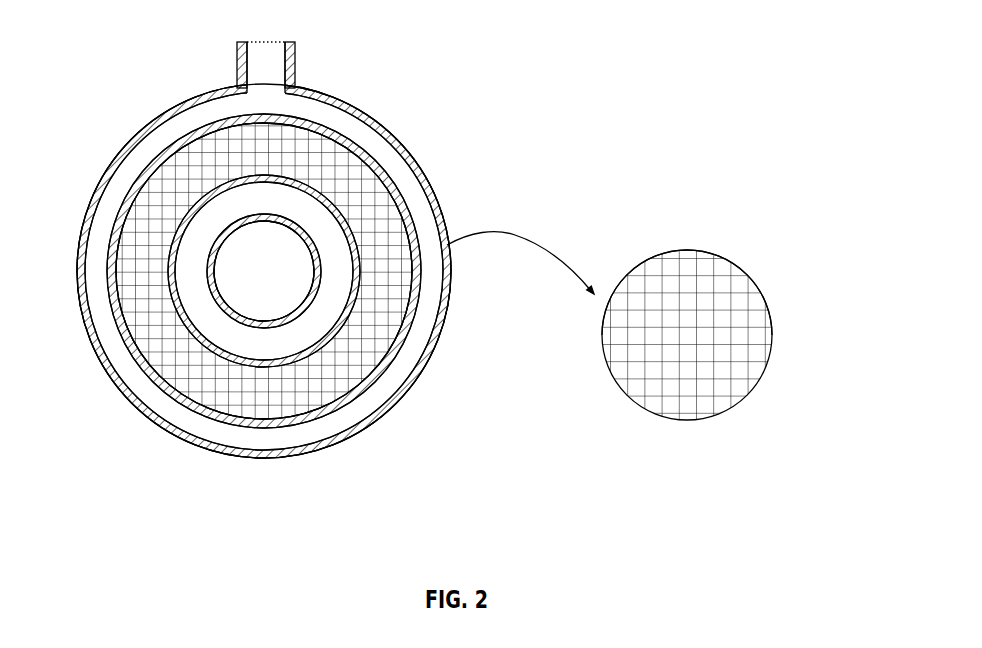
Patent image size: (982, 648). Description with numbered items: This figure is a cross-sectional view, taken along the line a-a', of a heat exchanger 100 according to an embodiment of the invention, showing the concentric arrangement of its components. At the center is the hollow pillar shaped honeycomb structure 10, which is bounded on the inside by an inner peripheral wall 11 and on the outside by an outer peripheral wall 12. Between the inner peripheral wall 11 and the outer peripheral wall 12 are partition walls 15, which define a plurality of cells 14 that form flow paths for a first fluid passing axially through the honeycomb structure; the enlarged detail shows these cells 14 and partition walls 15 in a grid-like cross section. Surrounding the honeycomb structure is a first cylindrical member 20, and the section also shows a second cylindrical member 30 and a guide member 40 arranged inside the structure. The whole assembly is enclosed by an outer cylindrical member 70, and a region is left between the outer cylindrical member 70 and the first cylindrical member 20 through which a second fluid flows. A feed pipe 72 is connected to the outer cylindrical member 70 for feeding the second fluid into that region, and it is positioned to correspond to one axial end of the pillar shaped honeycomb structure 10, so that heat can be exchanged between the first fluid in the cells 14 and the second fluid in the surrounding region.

The hollow pillar shaped honeycomb structure 10 is at (405, 213).
The inner peripheral wall 11 is at (347, 219).
The outer peripheral wall 12 is at (410, 317).
The cells 14 is at (718, 285).
The partition walls 15 is at (730, 323).
The first cylindrical member 20 is at (390, 358).
The second cylindrical member 30 is at (293, 233).
The guide member 40 is at (297, 220).
The outer cylindrical member 70 is at (393, 400).
The feed pipe 72 is at (297, 62).
The heat exchanger 100 is at (337, 542).